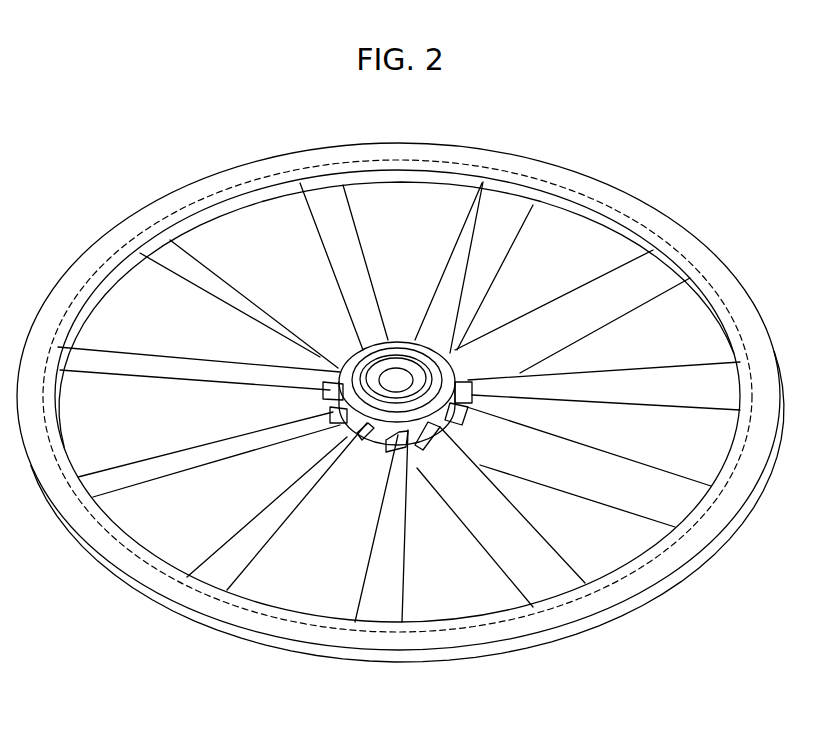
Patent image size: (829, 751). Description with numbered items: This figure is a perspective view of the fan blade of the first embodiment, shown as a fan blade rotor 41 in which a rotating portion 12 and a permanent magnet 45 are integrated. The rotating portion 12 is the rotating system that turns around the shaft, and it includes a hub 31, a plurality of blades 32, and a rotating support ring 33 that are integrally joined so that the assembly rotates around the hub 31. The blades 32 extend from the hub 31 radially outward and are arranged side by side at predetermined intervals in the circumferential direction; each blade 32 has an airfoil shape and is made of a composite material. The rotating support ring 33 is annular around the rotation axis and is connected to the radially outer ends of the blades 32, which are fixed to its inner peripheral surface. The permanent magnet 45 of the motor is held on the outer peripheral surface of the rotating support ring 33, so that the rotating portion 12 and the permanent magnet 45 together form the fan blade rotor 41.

The rotating portion 12 is at (372, 222).
The hub 31 is at (355, 346).
The blades 32 is at (150, 463).
The rotating support ring 33 is at (673, 547).
The fan blade rotor 41 is at (567, 156).
The permanent magnet 45 is at (620, 592).